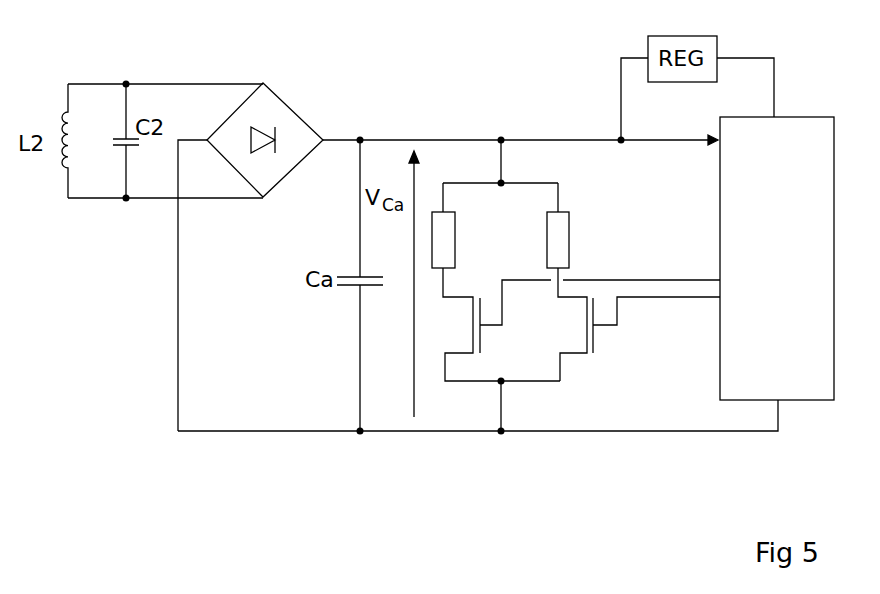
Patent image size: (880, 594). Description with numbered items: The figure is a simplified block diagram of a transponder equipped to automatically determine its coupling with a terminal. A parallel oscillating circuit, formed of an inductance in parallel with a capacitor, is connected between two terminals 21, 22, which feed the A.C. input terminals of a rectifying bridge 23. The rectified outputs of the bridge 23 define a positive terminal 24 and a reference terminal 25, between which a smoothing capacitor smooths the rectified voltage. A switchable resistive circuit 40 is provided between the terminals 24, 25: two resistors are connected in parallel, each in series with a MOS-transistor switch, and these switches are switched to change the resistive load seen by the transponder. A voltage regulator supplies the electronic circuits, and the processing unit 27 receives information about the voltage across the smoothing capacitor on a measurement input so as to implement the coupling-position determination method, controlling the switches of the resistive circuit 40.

The terminal 21 is at (126, 84).
The terminal 22 is at (126, 198).
The rectifying bridge 23 is at (295, 112).
The positive terminal 24 is at (360, 140).
The reference terminal 25 is at (361, 431).
The processing unit 27 is at (808, 117).
The switchable resistive circuit 40 is at (491, 215).